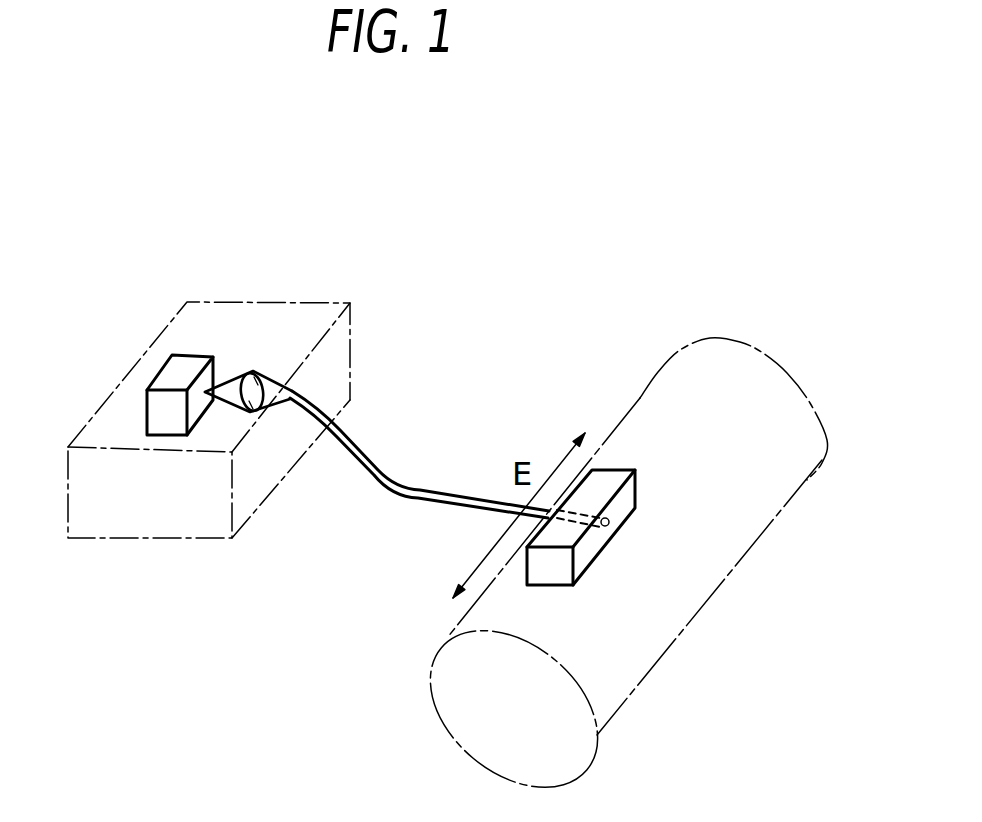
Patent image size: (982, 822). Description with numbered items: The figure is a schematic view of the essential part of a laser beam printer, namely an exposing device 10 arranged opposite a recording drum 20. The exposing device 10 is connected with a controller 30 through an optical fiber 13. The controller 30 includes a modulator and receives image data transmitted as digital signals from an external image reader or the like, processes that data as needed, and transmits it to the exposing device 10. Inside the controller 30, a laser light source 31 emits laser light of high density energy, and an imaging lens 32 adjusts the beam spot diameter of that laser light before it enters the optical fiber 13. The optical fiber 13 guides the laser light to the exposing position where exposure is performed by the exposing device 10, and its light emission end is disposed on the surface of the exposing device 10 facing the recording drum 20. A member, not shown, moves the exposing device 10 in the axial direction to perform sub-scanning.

The exposing device 10 is at (600, 483).
The optical fiber 13 is at (433, 497).
The recording drum 20 is at (777, 452).
The controller 30 is at (287, 320).
The laser light source 31 is at (177, 370).
The imaging lens 32 is at (262, 385).